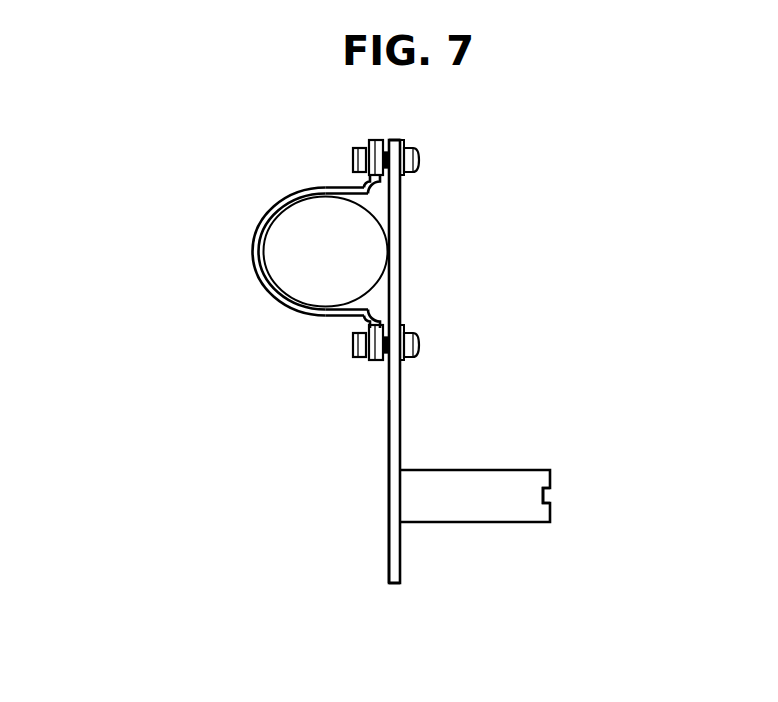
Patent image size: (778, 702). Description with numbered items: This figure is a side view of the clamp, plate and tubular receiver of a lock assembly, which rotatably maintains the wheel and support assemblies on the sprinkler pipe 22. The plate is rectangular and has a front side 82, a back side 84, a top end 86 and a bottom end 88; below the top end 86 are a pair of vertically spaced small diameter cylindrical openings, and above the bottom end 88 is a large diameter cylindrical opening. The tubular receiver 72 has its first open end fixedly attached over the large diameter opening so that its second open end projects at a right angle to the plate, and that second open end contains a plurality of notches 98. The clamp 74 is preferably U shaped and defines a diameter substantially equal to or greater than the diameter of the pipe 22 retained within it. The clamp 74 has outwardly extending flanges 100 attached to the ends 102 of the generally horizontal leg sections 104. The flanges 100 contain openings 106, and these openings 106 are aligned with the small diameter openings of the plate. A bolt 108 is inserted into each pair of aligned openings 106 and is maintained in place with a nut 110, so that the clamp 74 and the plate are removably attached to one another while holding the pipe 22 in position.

The sprinkler pipe 22 is at (300, 277).
The tubular receiver 72 is at (496, 522).
The clamp 74 is at (260, 252).
The front side 82 is at (402, 556).
The back side 84 is at (388, 543).
The top end 86 is at (393, 140).
The bottom end 88 is at (396, 584).
The notches 98 is at (551, 497).
The outwardly extending flanges 100 is at (377, 140).
The ends 102 is at (365, 180).
The horizontal leg sections 104 is at (357, 187).
The openings 106 is at (402, 141).
The bolt 108 is at (355, 149).
The nut 110 is at (419, 158).